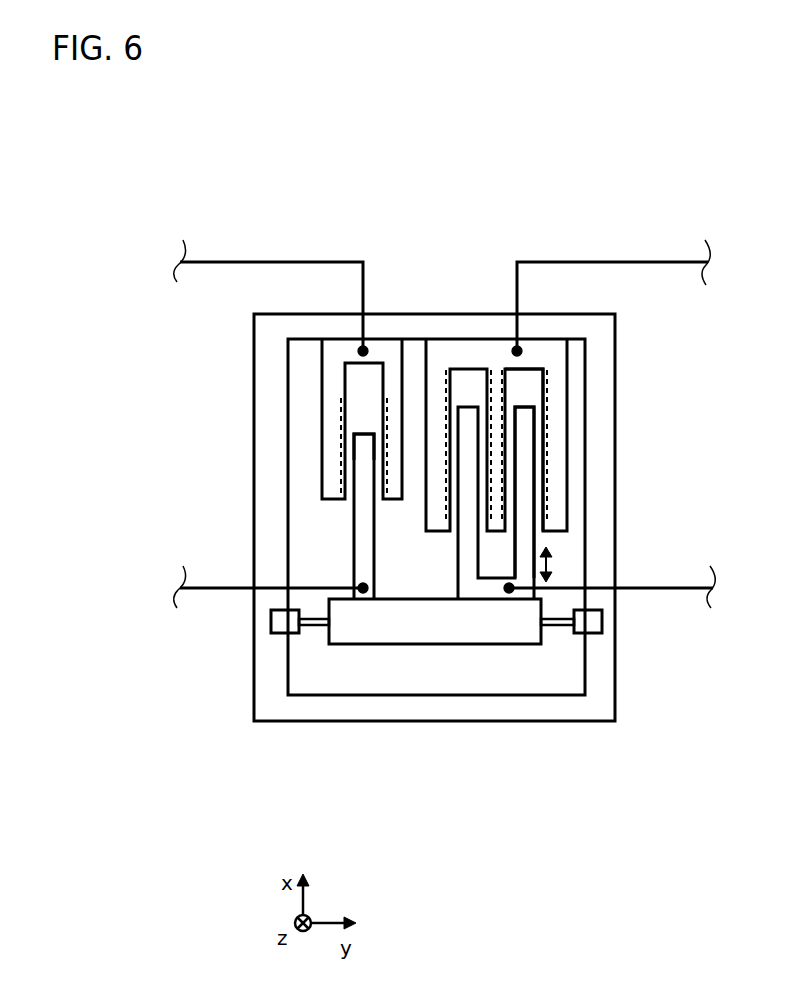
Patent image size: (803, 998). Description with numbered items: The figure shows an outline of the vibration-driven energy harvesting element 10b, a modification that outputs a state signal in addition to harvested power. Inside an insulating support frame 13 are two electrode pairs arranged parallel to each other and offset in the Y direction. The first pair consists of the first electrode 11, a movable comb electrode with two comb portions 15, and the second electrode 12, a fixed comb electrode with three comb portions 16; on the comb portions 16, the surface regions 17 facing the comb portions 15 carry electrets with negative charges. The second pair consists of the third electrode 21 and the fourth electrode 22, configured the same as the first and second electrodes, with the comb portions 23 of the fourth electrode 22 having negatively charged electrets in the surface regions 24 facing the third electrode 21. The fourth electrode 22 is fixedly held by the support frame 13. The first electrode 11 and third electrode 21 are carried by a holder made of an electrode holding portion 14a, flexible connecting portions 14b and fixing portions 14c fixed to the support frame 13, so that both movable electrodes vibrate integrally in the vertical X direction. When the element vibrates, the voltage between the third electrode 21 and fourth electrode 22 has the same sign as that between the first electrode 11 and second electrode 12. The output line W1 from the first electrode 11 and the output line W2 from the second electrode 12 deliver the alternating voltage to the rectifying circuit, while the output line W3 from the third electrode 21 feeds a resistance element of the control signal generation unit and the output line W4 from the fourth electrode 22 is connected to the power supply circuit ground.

The vibration-driven energy harvesting element 10b is at (218, 181).
The first electrode 11 is at (528, 540).
The second electrode 12 is at (483, 353).
The support frame 13 is at (265, 537).
The electrode holding portion 14a is at (432, 628).
The connecting portions 14b is at (315, 625).
The fixing portions 14c is at (277, 623).
The comb portions 15 is at (527, 507).
The comb portions 16 is at (560, 448).
The surface regions 17 is at (552, 393).
The third electrode 21 is at (357, 542).
The fourth electrode 22 is at (332, 363).
The comb portions 23 is at (333, 410).
The surface regions 24 is at (342, 445).
The output line W1 is at (662, 588).
The output line W2 is at (660, 262).
The output line W3 is at (220, 588).
The output line W4 is at (292, 260).